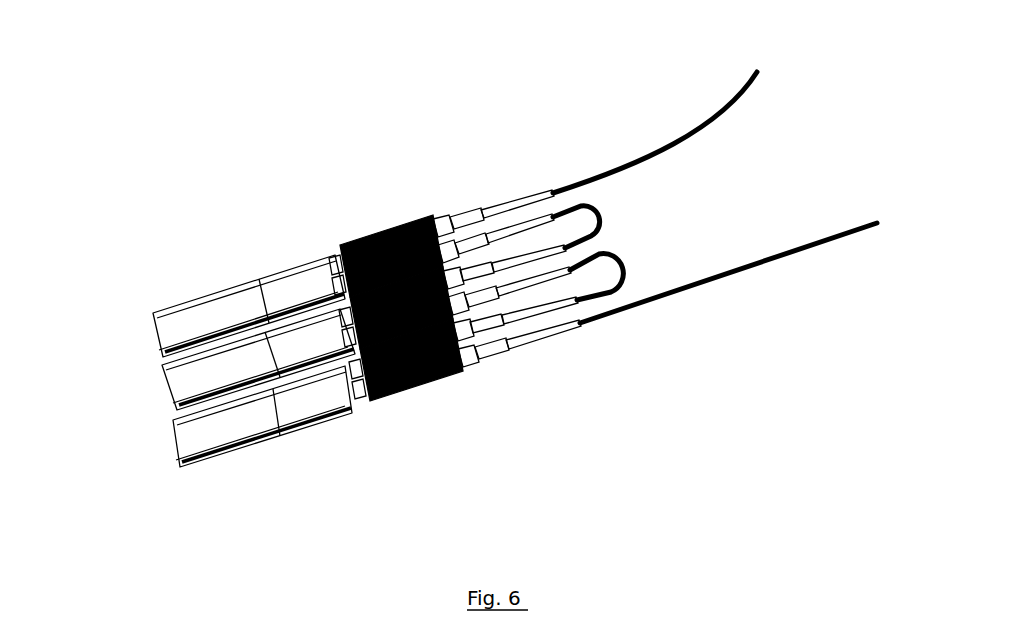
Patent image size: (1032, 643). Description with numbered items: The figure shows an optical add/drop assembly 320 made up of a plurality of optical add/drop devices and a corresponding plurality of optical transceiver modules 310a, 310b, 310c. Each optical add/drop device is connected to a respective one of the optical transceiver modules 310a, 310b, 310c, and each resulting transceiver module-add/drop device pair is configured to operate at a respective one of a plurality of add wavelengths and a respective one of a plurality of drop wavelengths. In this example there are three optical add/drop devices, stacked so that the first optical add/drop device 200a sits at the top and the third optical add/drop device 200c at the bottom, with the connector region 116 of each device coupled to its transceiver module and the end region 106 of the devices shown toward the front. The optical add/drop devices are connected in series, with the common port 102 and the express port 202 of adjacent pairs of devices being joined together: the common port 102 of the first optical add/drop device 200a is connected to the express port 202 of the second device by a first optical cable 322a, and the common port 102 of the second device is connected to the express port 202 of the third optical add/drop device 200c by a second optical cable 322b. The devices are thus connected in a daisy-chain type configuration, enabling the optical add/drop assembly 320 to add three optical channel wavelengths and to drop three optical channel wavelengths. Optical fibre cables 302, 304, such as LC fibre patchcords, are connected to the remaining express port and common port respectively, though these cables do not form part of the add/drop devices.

The optical add/drop assembly 320 is at (205, 258).
The optical transceiver module 310a is at (182, 325).
The optical transceiver module 310b is at (187, 382).
The optical transceiver module 310c is at (233, 430).
The electrical connector 116 is at (333, 258).
The first optical add/drop device 200a is at (383, 248).
The third optical add/drop device 200c is at (422, 367).
The express port 202 is at (445, 230).
The common port 102 is at (482, 353).
The module housing end 106 is at (365, 395).
The optical fibre cable 302 is at (602, 177).
The first optical cable 322a is at (607, 217).
The second optical cable 322b is at (625, 262).
The optical fibre cable 304 is at (663, 295).